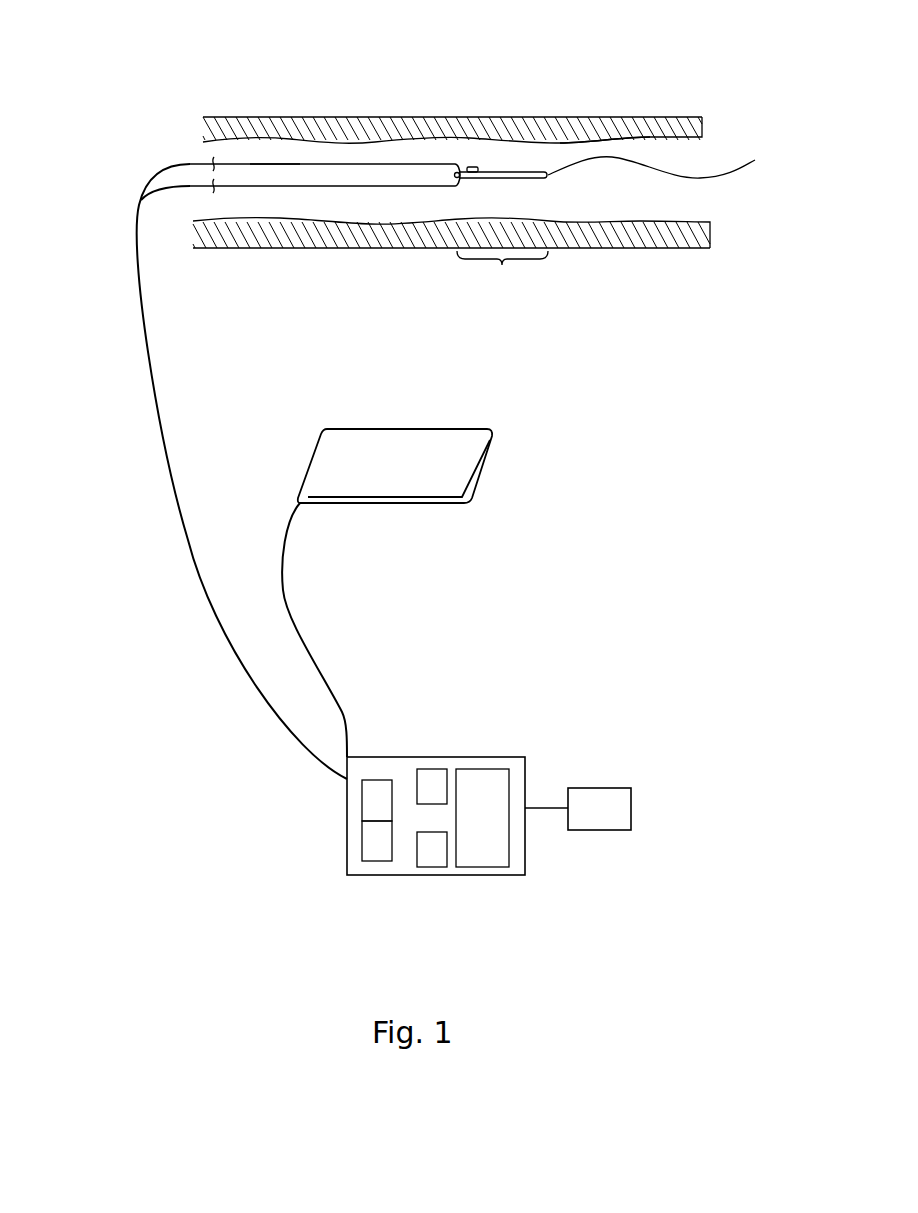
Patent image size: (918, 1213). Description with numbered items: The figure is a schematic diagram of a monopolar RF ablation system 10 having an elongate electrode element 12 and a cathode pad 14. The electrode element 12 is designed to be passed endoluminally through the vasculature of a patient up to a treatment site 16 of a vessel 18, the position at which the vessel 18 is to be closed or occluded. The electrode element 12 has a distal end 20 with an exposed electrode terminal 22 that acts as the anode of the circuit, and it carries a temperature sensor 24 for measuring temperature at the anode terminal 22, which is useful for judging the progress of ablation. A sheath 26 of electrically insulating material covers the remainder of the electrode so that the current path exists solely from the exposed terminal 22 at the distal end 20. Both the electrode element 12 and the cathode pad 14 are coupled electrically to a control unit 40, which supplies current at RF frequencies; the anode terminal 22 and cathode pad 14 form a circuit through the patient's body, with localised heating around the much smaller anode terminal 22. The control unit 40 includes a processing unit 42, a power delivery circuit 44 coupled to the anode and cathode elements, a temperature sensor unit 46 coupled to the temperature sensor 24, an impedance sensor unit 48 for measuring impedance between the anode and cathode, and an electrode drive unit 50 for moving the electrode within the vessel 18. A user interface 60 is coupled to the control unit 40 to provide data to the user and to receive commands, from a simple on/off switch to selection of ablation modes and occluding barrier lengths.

The monopolar RF ablation system 10 is at (125, 448).
The elongate electrode element 12 is at (364, 150).
The cathode pad 14 is at (522, 417).
The treatment site 16 is at (502, 267).
The vessel 18 is at (652, 128).
The distal end 20 is at (552, 105).
The exposed electrode terminal 22 is at (618, 162).
The temperature sensor 24 is at (470, 165).
The sheath 26 is at (267, 175).
The control unit 40 is at (336, 905).
The processing unit 42 is at (510, 790).
The power delivery circuit 44 is at (362, 796).
The temperature sensor unit 46 is at (423, 770).
The impedance sensor unit 48 is at (440, 862).
The electrode drive unit 50 is at (362, 862).
The user interface 60 is at (631, 805).